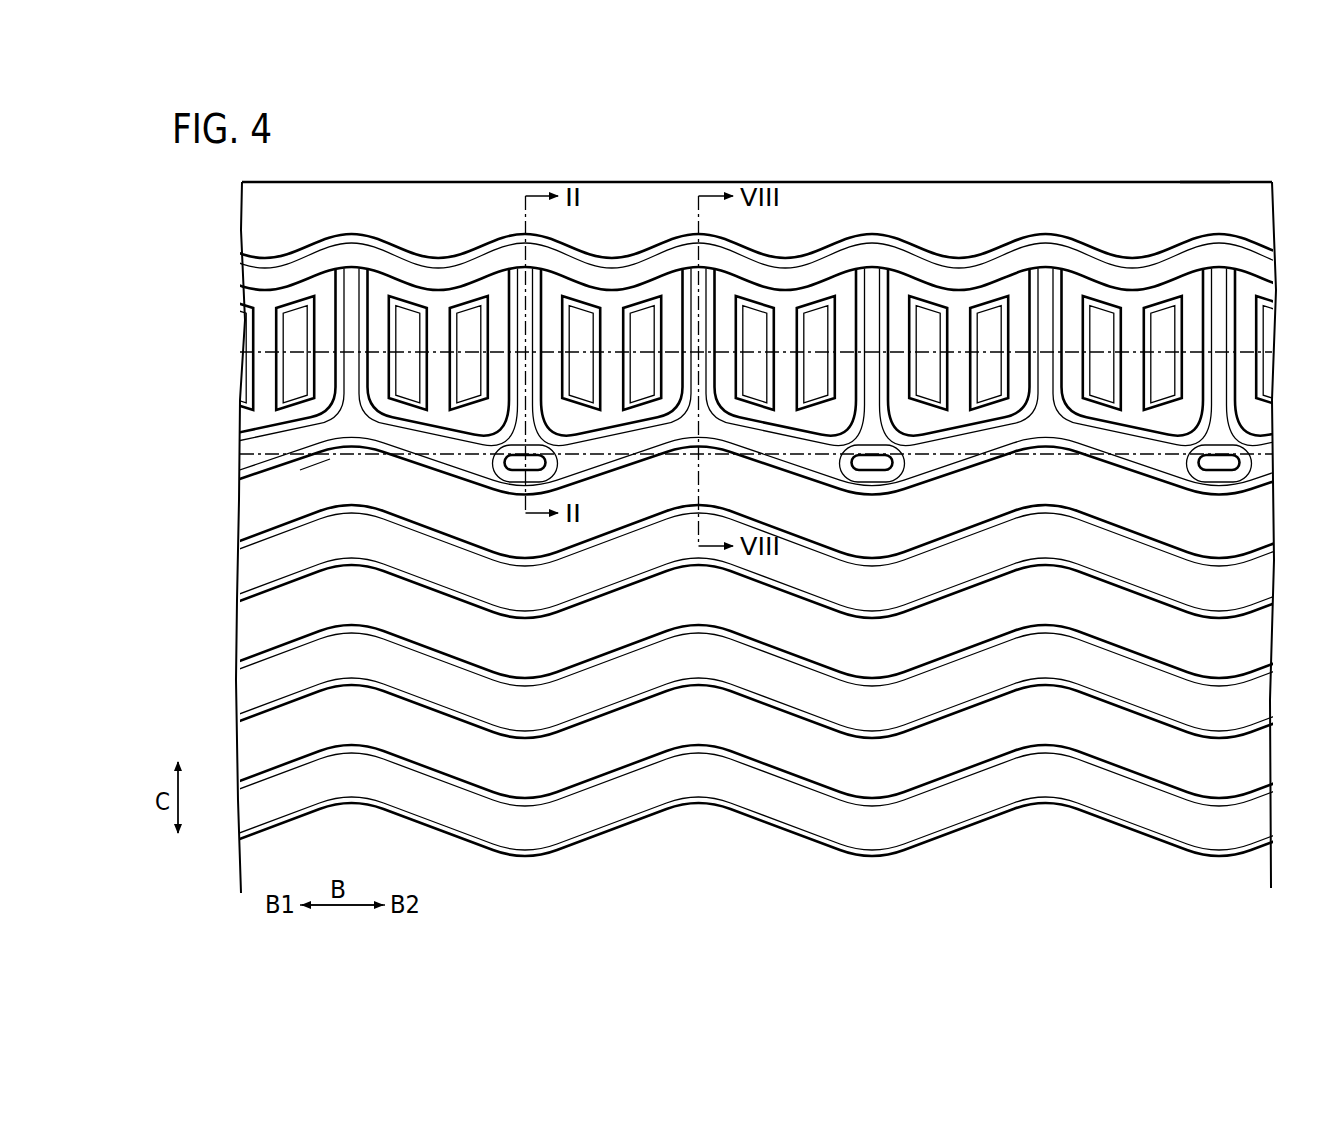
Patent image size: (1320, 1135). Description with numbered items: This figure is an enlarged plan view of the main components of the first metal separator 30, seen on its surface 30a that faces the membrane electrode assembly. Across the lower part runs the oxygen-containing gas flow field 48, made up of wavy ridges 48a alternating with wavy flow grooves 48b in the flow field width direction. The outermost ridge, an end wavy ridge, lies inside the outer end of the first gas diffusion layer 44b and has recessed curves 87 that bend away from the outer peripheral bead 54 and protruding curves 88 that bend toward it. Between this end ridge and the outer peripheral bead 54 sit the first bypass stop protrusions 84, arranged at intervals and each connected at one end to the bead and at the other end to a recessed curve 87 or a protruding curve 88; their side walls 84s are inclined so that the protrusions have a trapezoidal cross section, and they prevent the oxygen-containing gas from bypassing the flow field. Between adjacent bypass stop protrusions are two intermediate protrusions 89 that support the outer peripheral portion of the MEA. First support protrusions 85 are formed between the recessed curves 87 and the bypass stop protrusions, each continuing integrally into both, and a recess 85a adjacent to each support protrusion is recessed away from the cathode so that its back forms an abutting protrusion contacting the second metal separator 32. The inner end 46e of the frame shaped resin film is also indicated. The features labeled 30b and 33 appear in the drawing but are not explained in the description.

The first metal separator 30 is at (1160, 181).
The surface of the first metal separator 30a is at (1025, 200).
The second surface of plate 30b is at (1065, 200).
The second metal separator 32 is at (1198, 181).
The plate body 33 is at (403, 136).
The first gas diffusion layer 44b is at (326, 352).
The inner end of the frame shaped resin film 46e is at (346, 434).
The oxygen-containing gas flow field 48 is at (853, 692).
The wavy ridges 48a is at (1163, 462).
The wavy flow grooves 48b is at (972, 505).
The outer peripheral bead 54 is at (867, 250).
The first bypass stop protrusions 84 is at (535, 300).
The side walls of the first bypass stop protrusions 84s is at (512, 332).
The first support protrusions 85 is at (518, 458).
The recess 85a is at (512, 462).
The recessed curves 87 is at (519, 490).
The protruding curves 88 is at (350, 430).
The intermediate protrusions 89 is at (467, 325).